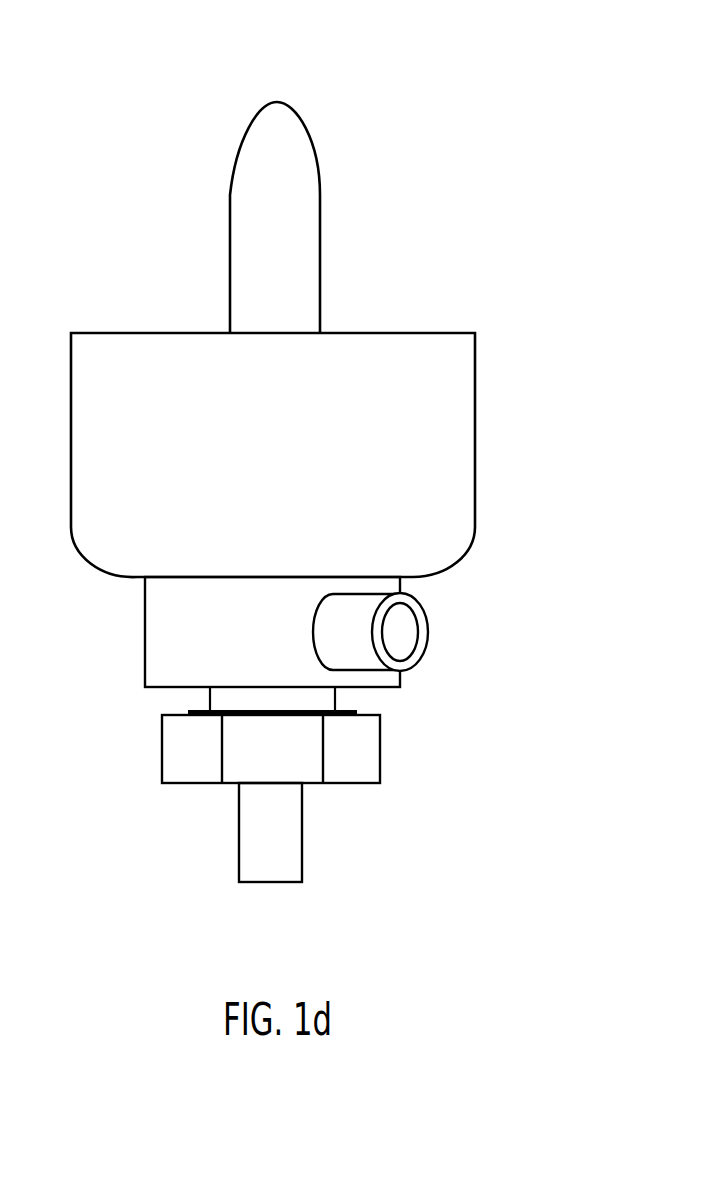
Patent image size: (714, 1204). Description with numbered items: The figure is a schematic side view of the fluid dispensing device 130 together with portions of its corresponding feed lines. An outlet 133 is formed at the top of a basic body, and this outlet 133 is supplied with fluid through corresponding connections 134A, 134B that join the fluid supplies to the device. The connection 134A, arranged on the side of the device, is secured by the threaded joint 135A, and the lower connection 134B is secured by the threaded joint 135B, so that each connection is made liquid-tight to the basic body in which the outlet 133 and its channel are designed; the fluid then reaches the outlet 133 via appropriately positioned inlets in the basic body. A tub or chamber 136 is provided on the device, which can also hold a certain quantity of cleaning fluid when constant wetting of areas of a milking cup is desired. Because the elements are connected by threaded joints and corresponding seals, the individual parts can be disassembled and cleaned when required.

The dispensing device 130 is at (444, 136).
The outlet 133 is at (278, 102).
The chamber 136 is at (472, 356).
The threaded joint 135A is at (144, 625).
The connection 134A is at (428, 627).
The threaded joint 135B is at (160, 745).
The connection 134B is at (292, 845).